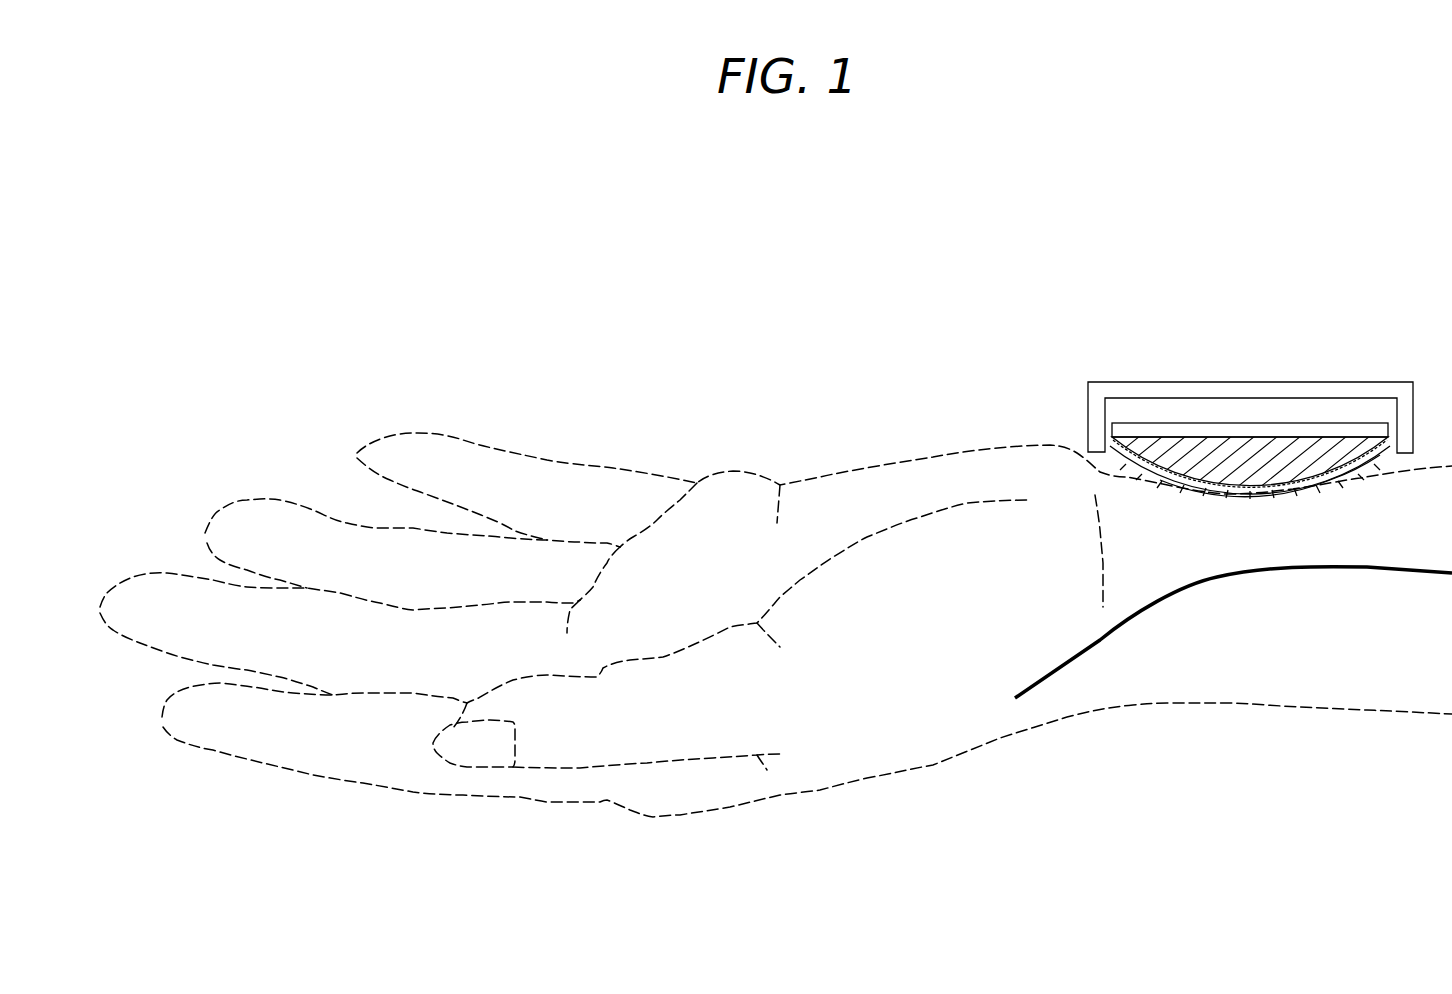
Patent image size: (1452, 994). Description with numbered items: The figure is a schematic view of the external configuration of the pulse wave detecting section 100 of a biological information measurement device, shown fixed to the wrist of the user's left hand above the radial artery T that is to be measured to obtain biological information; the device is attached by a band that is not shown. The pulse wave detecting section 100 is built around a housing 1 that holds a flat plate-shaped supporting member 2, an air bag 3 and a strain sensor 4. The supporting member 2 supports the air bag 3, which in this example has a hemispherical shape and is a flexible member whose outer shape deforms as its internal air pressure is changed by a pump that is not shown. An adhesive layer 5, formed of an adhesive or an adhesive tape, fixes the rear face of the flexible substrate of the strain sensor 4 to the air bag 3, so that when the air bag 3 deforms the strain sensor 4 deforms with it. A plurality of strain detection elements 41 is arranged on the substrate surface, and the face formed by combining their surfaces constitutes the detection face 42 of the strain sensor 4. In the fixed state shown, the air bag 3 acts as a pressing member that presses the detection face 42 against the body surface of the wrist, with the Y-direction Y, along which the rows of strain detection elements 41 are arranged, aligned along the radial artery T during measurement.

The pulse wave detecting section 100 is at (1348, 312).
The housing 1 is at (1282, 388).
The supporting member 2 is at (1143, 427).
The air bag 3 is at (1360, 443).
The strain sensor 4 is at (1196, 461).
The adhesive layer 5 is at (1343, 470).
The strain detection elements 41 is at (1330, 486).
The detection face 42 is at (1366, 481).
The radial artery T is at (1077, 652).
The Y-direction Y is at (1133, 777).